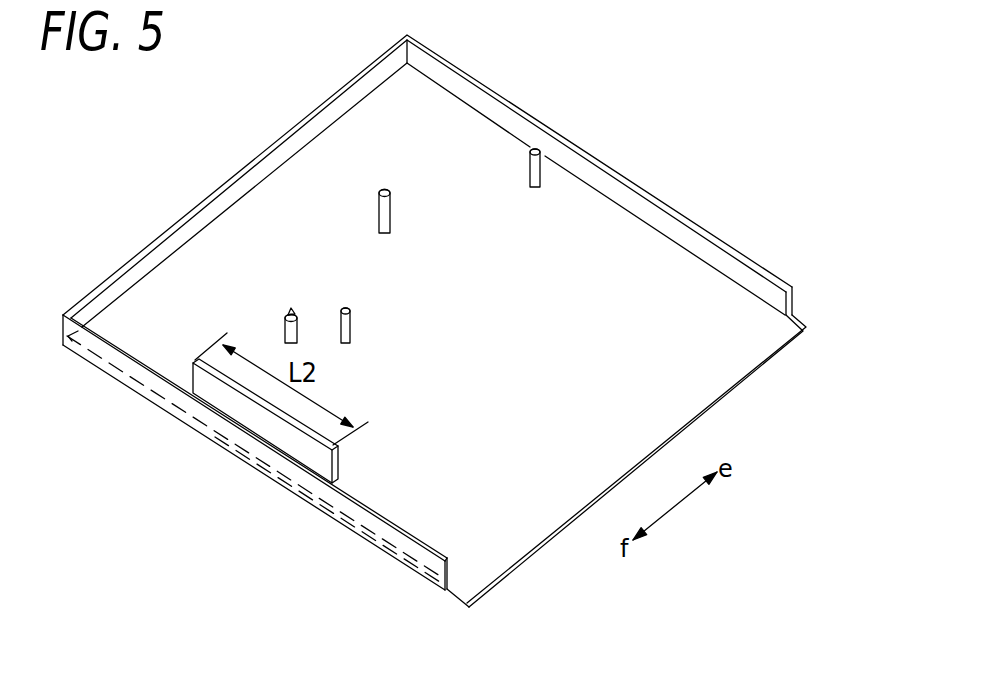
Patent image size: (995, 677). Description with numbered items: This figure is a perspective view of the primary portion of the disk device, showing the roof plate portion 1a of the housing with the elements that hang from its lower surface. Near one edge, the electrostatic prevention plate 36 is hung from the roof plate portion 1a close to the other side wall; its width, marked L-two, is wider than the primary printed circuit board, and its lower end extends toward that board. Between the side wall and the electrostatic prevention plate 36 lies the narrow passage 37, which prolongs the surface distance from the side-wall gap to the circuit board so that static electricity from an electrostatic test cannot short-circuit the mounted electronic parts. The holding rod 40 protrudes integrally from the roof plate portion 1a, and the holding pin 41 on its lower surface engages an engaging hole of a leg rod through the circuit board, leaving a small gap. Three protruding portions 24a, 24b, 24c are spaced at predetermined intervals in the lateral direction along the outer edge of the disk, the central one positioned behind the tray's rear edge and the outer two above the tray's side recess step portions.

The roof plate portion 1a is at (548, 498).
The protruding portion 24a is at (350, 323).
The protruding portion 24b is at (386, 233).
The protruding portion 24c is at (535, 187).
The electrostatic prevention plate 36 is at (336, 465).
The narrow passage 37 is at (207, 391).
The holding rod 40 is at (287, 337).
The holding pin 41 is at (290, 310).